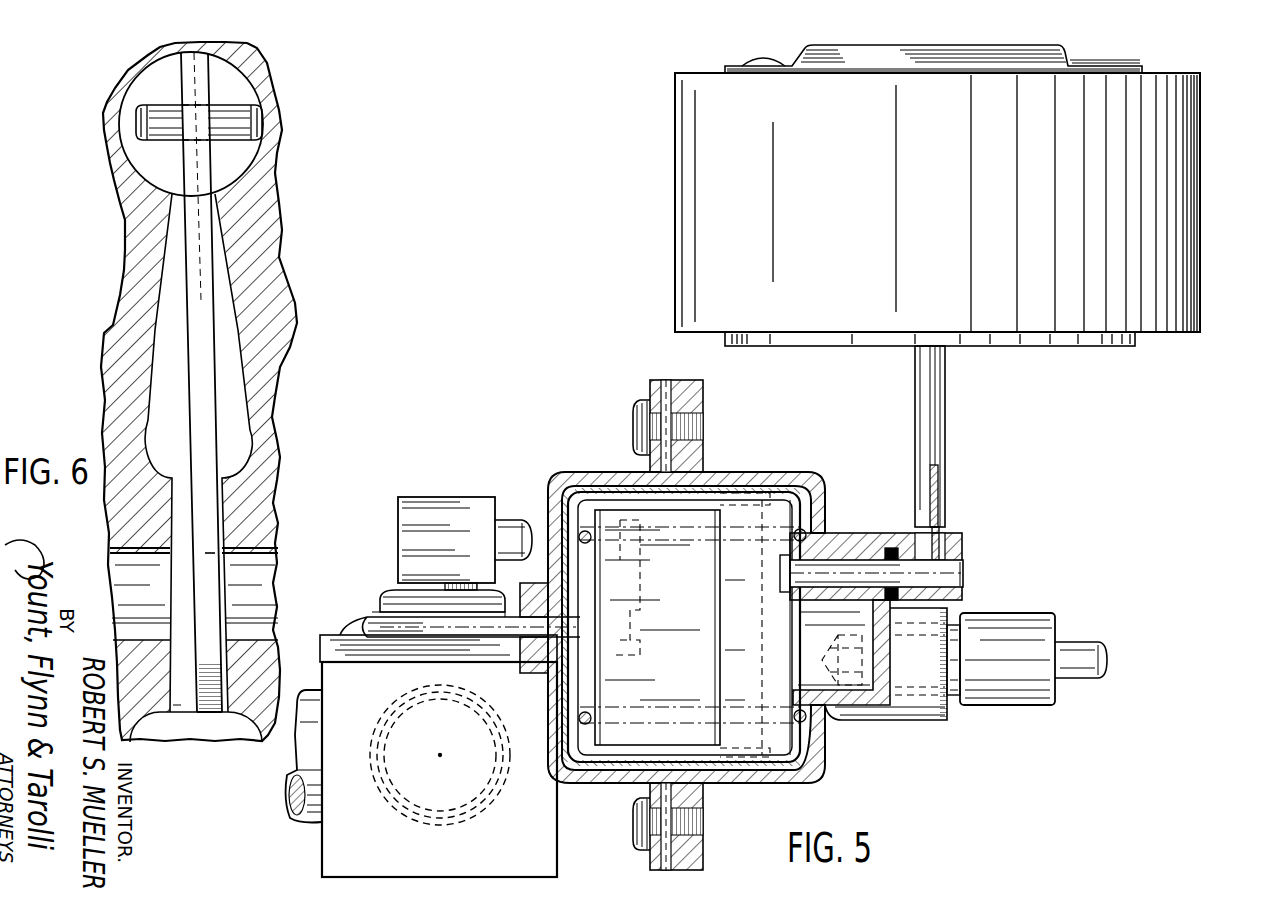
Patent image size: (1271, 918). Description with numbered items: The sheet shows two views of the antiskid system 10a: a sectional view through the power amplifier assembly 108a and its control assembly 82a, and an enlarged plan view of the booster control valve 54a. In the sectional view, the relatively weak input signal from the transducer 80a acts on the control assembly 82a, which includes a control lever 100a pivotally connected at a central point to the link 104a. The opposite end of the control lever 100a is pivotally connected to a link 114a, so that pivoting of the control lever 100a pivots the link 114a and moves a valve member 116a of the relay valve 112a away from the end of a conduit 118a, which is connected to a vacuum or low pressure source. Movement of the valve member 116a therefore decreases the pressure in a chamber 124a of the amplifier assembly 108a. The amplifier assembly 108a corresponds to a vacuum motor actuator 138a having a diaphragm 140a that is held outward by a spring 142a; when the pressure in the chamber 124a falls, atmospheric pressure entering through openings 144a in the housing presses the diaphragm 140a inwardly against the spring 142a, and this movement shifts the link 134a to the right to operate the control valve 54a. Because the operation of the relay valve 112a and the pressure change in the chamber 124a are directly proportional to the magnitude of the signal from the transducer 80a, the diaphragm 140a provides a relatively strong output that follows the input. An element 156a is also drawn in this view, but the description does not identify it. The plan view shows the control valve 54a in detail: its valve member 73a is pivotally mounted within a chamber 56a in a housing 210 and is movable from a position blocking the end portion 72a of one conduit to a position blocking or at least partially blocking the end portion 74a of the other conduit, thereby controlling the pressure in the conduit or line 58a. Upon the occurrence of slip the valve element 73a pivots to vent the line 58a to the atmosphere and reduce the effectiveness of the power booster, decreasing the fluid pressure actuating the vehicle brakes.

In FIG. 6, the housing 210 is at (276, 179).
In FIG. 6, the booster control valve 54a is at (334, 230).
In FIG. 5, the booster control valve 54a is at (562, 832).
In FIG. 6, the valve element 73a is at (200, 450).
In FIG. 6, the end portion of conduit 74a is at (148, 552).
In FIG. 6, the end portion of conduit 72a is at (258, 552).
In FIG. 6, the chamber 56a is at (168, 657).
In FIG. 5, the transducer 80a is at (670, 192).
In FIG. 5, the control assembly 82a is at (620, 400).
In FIG. 5, the seal 138a is at (623, 468).
In FIG. 5, the diaphragm 140a is at (608, 487).
In FIG. 5, the power amplifier assembly 108a is at (717, 624).
In FIG. 5, the chamber 124a is at (777, 505).
In FIG. 5, the spring 142a is at (798, 539).
In FIG. 5, the link 104a is at (939, 394).
In FIG. 5, the control lever 100a is at (937, 490).
In FIG. 5, the link 114a is at (936, 538).
In FIG. 5, the antiskid system 10a is at (864, 608).
In FIG. 5, the relay valve 112a is at (972, 596).
In FIG. 5, the valve member 116a is at (800, 633).
In FIG. 5, the conduit 118a is at (1080, 640).
In FIG. 5, the solenoid 156a is at (500, 512).
In FIG. 5, the openings 144a is at (545, 502).
In FIG. 5, the link 134a is at (396, 606).
In FIG. 5, the conduit 58a is at (317, 818).